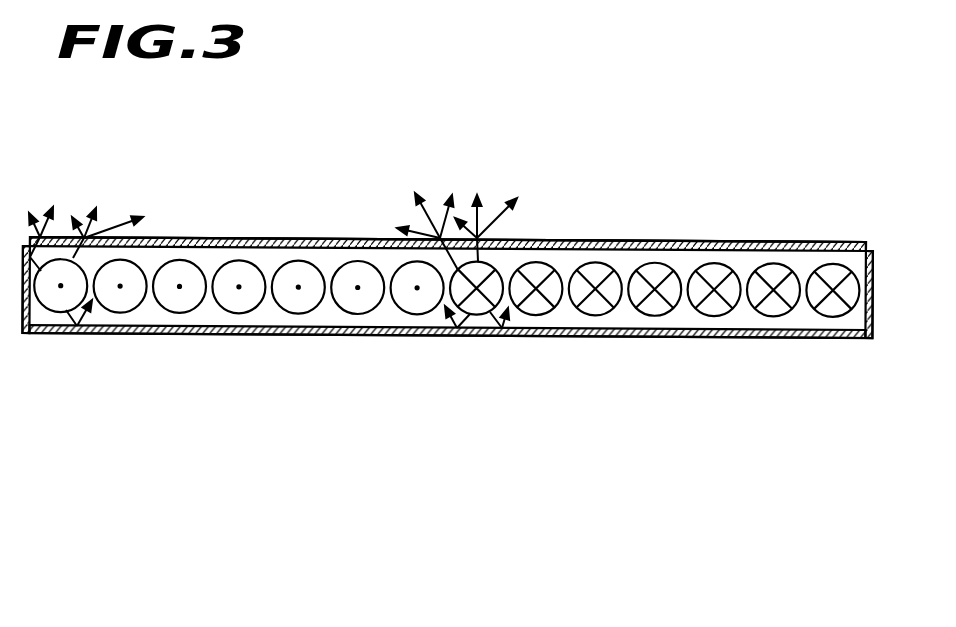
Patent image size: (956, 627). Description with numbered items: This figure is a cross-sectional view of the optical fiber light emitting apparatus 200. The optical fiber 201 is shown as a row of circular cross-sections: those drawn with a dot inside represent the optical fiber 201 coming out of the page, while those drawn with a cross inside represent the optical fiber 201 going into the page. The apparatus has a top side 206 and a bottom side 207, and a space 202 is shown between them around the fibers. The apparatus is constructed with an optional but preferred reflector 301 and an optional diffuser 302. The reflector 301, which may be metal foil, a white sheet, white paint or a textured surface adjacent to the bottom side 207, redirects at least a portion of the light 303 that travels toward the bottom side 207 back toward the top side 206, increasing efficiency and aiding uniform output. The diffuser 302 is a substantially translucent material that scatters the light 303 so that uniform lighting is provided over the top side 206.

The optical fiber light emitting apparatus 200 is at (473, 68).
The optical fiber 201 is at (300, 305).
The lamp space 202 is at (563, 262).
The top side 206 is at (742, 248).
The bottom side 207 is at (395, 337).
The reflector 301 is at (26, 302).
The diffuser 302 is at (172, 238).
The light 303 is at (463, 183).